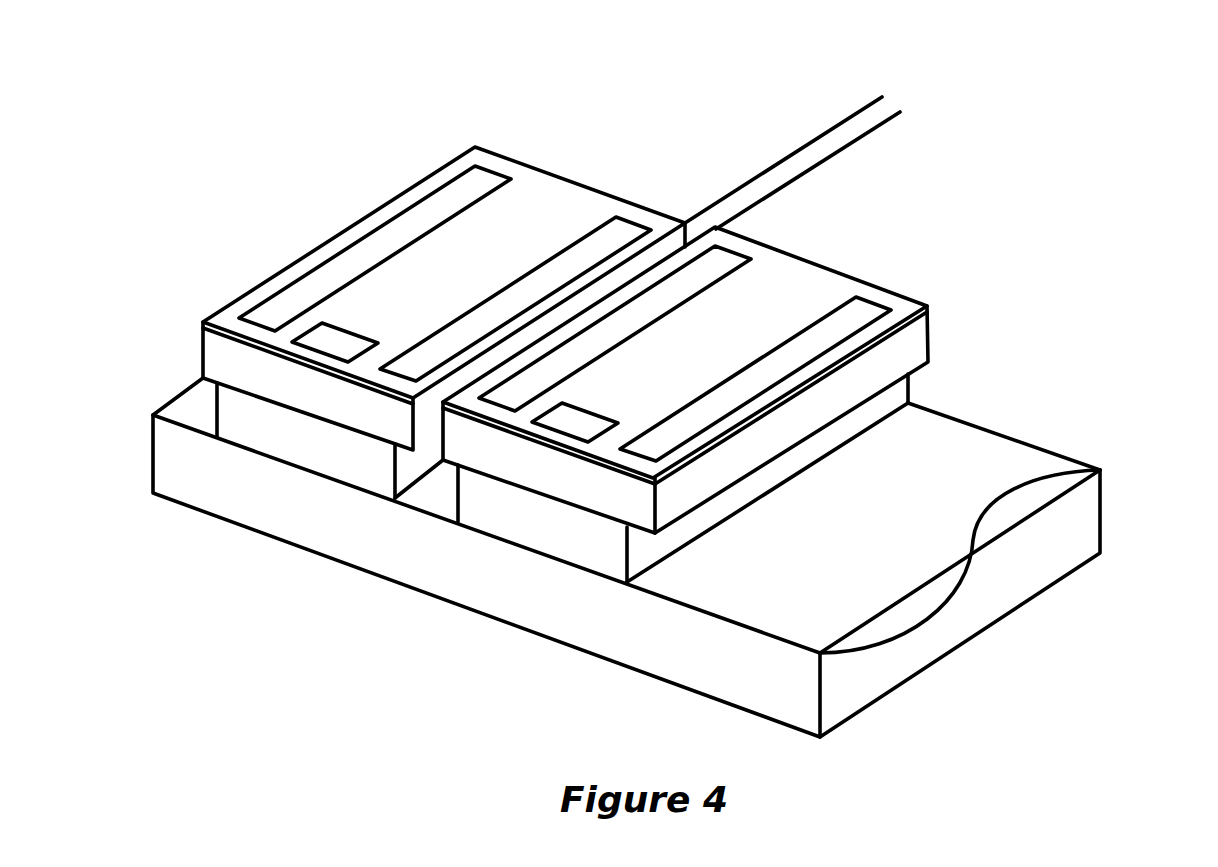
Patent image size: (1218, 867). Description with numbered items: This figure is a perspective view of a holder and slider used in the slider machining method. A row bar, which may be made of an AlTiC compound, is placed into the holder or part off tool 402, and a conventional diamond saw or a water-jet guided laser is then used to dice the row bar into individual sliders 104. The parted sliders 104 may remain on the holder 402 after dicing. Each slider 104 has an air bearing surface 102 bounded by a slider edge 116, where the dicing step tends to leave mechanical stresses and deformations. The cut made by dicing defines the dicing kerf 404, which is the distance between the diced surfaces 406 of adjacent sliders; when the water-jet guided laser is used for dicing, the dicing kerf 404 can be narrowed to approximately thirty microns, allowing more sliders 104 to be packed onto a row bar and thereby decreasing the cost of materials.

The air bearing surface 102 is at (408, 283).
The slider 104 is at (463, 140).
The slider edge 116 is at (905, 603).
The holder 402 is at (1003, 463).
The dicing kerf 404 is at (833, 138).
The diced surface 406 is at (428, 412).